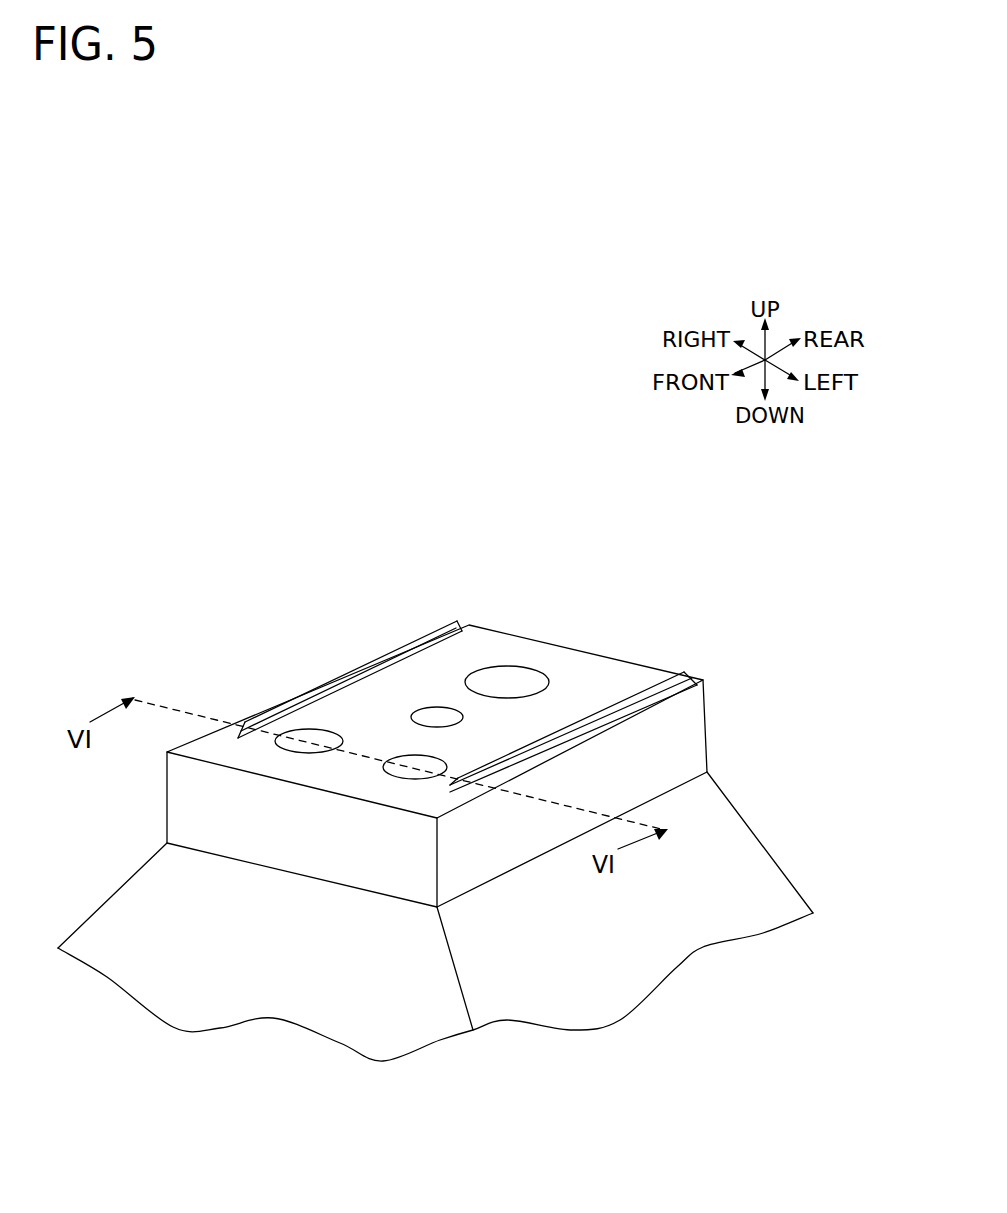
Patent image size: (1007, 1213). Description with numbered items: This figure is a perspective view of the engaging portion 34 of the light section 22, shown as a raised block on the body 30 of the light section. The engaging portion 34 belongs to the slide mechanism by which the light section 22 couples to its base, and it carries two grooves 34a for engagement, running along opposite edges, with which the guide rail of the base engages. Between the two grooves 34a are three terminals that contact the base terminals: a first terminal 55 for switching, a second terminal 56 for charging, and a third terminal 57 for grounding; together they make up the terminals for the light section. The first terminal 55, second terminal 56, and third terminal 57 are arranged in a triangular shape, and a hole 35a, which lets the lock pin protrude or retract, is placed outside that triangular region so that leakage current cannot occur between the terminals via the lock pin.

The light section 22 is at (767, 795).
The body 30 is at (143, 943).
The engaging portion 34 is at (181, 786).
The grooves 34a is at (427, 641).
The hole 35a is at (502, 670).
The first terminal 55 is at (311, 733).
The second terminal 56 is at (410, 757).
The third terminal 57 is at (433, 712).